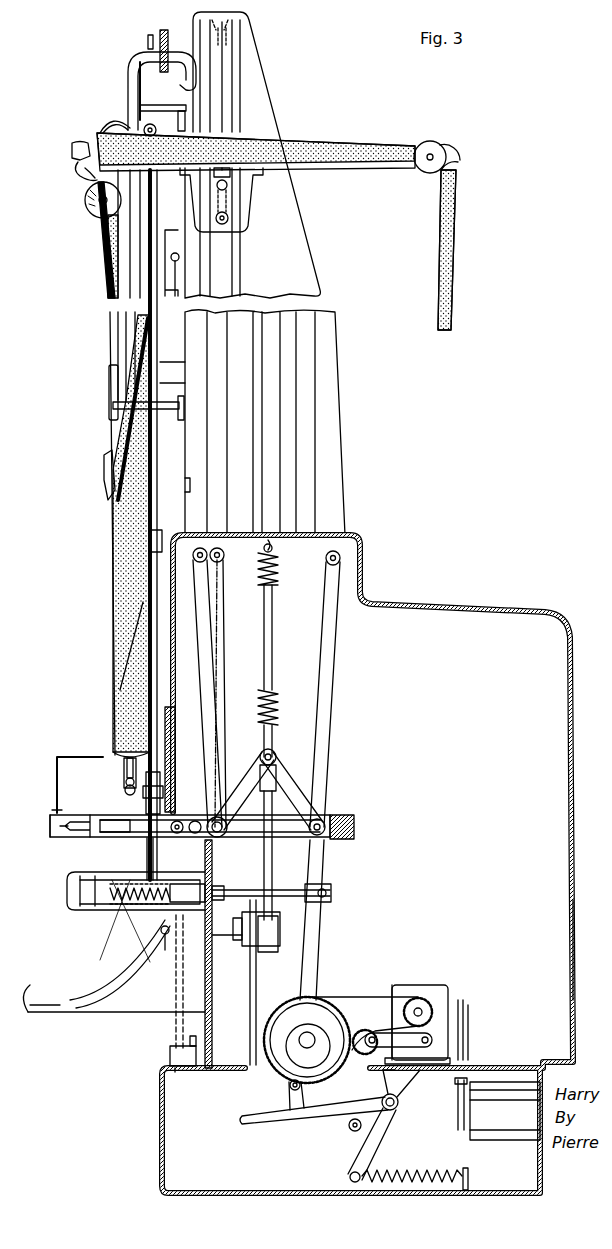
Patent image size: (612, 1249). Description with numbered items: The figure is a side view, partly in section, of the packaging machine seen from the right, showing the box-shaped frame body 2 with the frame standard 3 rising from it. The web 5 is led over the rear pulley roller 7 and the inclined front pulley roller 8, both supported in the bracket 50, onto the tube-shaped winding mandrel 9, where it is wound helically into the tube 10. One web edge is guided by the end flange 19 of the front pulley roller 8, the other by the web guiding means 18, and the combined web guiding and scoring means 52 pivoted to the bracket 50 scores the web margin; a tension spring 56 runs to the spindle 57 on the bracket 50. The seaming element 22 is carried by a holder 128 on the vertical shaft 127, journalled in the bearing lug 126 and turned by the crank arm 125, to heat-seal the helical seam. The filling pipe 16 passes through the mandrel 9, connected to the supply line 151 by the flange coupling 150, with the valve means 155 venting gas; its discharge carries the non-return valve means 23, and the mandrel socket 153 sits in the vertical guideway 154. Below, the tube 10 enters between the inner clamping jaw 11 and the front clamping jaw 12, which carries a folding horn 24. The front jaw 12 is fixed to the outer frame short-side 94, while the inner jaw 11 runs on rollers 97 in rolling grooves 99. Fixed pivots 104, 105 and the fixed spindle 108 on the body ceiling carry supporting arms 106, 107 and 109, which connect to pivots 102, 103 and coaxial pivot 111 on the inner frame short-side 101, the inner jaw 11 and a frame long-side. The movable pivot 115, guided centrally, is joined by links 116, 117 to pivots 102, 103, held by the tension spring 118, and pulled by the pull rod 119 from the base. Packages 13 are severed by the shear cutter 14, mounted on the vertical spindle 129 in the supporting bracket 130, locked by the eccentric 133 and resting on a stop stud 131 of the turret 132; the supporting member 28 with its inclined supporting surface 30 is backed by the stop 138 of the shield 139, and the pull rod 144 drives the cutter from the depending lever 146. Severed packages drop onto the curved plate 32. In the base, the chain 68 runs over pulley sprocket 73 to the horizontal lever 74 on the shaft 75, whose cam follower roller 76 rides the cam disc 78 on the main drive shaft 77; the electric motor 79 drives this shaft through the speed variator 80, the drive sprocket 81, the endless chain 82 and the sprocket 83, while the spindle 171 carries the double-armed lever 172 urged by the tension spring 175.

The box-shaped frame body 2 is at (574, 690).
The frame standard 3 is at (265, 95).
The web 5 is at (460, 218).
The rear pulley roller 7 is at (428, 143).
The inclined front pulley roller 8 is at (96, 200).
The winding mandrel 9 is at (132, 340).
The tube 10 is at (130, 552).
The inner clamping jaw 11 is at (170, 815).
The front clamping jaw 12 is at (55, 828).
The tetrahedron-shaped package 13 is at (135, 935).
The shear cutter 14 is at (110, 902).
The filling pipe 16 is at (137, 212).
The web guiding means 18 is at (108, 388).
The end flange 19 is at (110, 125).
The seaming element 22 is at (104, 462).
The non-return valve means 23 is at (128, 775).
The folding horn 24 is at (56, 768).
The supporting member 28 is at (90, 838).
The inclined supporting surface 30 is at (148, 850).
The curved plate 32 is at (36, 993).
The bracket 50 is at (360, 162).
The combined web guiding and scoring means 52 is at (146, 124).
The tension spring 56 is at (83, 182).
The spindle 57 is at (74, 148).
The chain 68 is at (250, 999).
The pulley sprocket 73 is at (250, 946).
The horizontal lever 74 is at (280, 1122).
The horizontal shaft 75 is at (399, 1102).
The cam follower roller 76 is at (289, 1090).
The main drive shaft 77 is at (312, 1036).
The cam disc 78 is at (330, 1050).
The electric motor 79 is at (498, 1125).
The speed variator 80 is at (440, 996).
The drive sprocket 81 is at (428, 1012).
The endless chain 82 is at (392, 1000).
The sprocket 83 is at (300, 1008).
The outer frame short-side 94 is at (57, 812).
The roller 97 is at (176, 835).
The rolling groove 99 is at (116, 834).
The inner frame short-side 101 is at (355, 822).
The pivot 102 is at (326, 833).
The pivot 103 is at (224, 840).
The fixed pivot 104 is at (355, 536).
The front fixed pivot 105 is at (206, 548).
The supporting arm 106 is at (212, 726).
The second supporting arm 107 is at (340, 652).
The fixed spindle 108 is at (222, 548).
The supporting arm 109 is at (215, 580).
The coaxial pivot 111 is at (214, 860).
The movable pivot 115 is at (272, 752).
The link 116 is at (296, 792).
The link 117 is at (243, 782).
The tension spring 118 is at (279, 568).
The pull rod 119 is at (269, 860).
The crank arm 125 is at (145, 808).
The bearing lug 126 is at (136, 752).
The vertical shaft 127 is at (150, 598).
The holder 128 is at (140, 505).
The vertical spindle 129 is at (177, 1025).
The supporting bracket 130 is at (105, 1014).
The stop stud 131 is at (172, 1048).
The turret 132 is at (180, 1072).
The eccentric 133 is at (165, 936).
The stop 138 is at (72, 912).
The shield 139 is at (67, 887).
The pull rod 144 is at (331, 896).
The depending lever 146 is at (318, 940).
The flange coupling 150 is at (163, 40).
The supply line 151 is at (135, 60).
The socket 153 is at (170, 258).
The vertical guideway 154 is at (190, 190).
The valve means 155 is at (150, 37).
The spindle 171 is at (352, 1150).
The double-armed lever 172 is at (347, 1122).
The tension spring 175 is at (405, 1172).